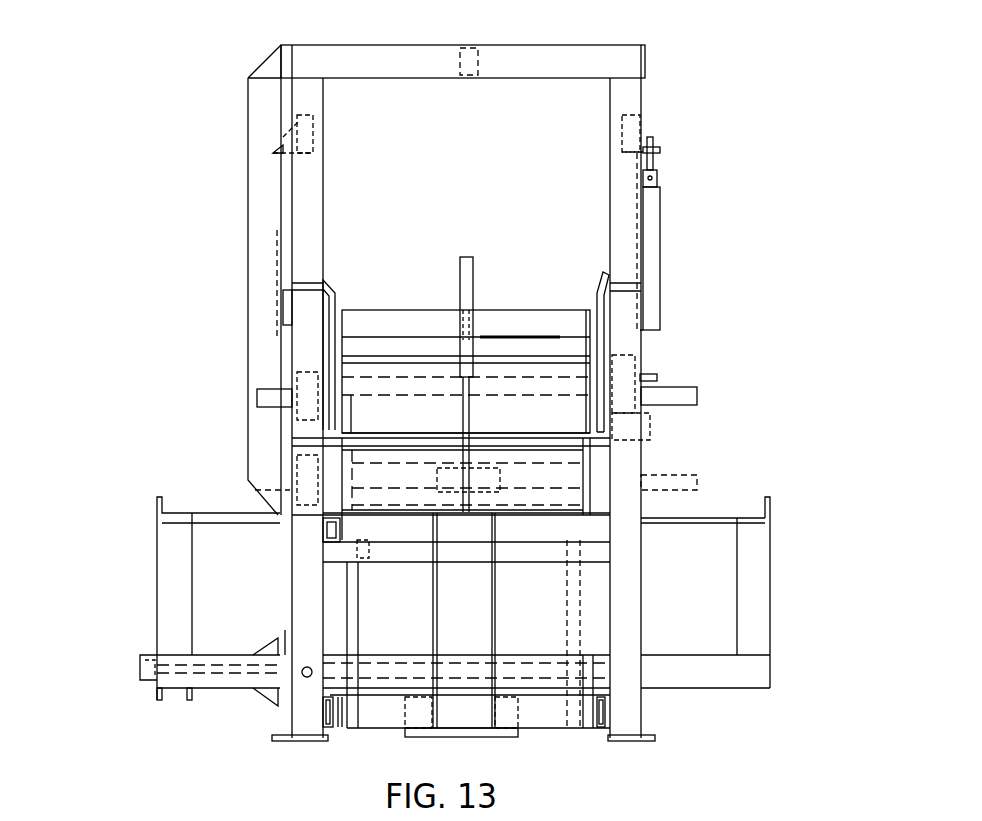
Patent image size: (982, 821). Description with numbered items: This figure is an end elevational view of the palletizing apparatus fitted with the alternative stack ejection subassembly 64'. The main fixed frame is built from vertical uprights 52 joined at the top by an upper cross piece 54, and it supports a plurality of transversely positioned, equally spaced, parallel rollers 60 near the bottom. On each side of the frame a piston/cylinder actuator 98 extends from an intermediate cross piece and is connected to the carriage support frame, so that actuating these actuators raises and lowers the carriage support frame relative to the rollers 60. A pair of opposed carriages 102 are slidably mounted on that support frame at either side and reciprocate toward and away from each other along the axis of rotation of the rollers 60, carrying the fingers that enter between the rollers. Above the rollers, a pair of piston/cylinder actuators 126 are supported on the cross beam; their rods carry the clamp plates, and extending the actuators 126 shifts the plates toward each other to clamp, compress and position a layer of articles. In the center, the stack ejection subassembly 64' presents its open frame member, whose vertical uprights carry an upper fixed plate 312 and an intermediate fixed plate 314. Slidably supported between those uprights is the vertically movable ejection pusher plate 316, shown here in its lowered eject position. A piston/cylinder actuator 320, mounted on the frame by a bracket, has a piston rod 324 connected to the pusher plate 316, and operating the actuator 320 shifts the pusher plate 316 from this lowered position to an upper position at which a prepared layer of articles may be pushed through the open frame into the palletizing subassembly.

The upper cross piece 54 is at (515, 46).
The vertical upright 52 is at (636, 120).
The piston/cylinder actuator 98 is at (655, 232).
The stack ejection subassembly 64' is at (451, 320).
The piston/cylinder actuator 320 is at (483, 290).
The upper fixed plate 312 is at (515, 318).
The intermediate fixed plate 314 is at (518, 378).
The piston rod 324 is at (470, 413).
The piston/cylinder actuator 126 is at (688, 395).
The ejection pusher plate 316 is at (550, 463).
The roller 60 is at (537, 520).
The carriage 102 is at (140, 565).